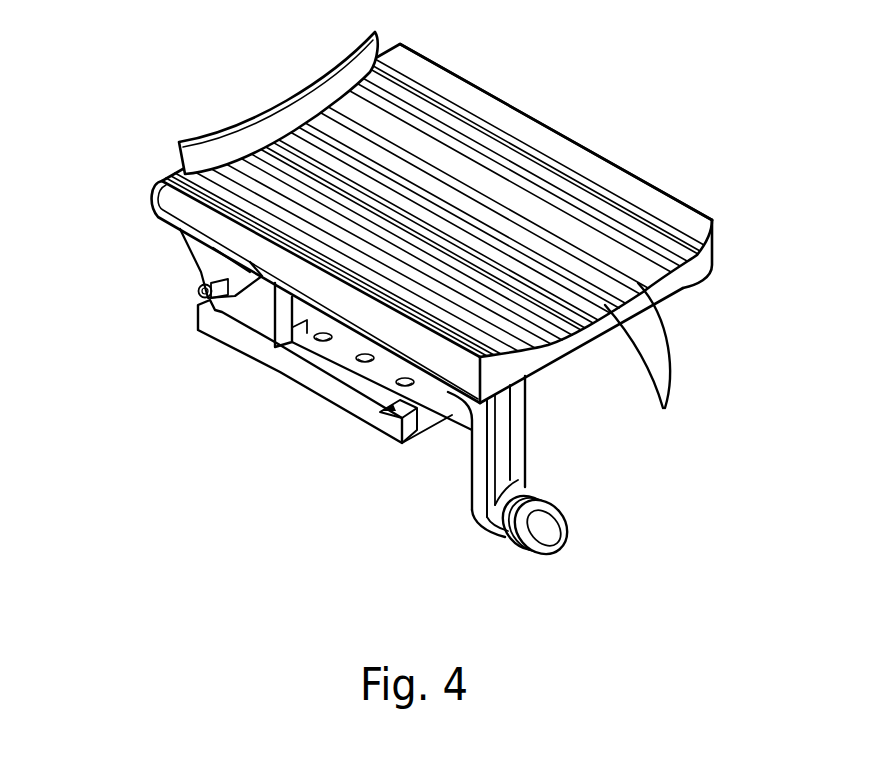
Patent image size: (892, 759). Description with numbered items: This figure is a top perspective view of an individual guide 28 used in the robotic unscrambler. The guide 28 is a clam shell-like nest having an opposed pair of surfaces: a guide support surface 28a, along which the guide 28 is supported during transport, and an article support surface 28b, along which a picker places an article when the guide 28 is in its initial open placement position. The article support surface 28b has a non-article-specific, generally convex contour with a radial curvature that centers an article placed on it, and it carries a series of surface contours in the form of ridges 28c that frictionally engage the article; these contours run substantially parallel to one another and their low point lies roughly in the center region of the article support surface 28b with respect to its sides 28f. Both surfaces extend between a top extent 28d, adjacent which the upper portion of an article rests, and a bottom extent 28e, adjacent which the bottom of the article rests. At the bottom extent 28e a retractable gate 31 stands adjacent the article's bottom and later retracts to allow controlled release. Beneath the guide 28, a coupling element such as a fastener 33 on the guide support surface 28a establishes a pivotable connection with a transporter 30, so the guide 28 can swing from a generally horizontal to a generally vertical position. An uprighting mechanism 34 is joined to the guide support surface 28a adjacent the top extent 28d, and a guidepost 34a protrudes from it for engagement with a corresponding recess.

The guide 28 is at (628, 106).
The guide support surface 28a is at (688, 286).
The article support surface 28b is at (472, 120).
The ridges 28c is at (581, 360).
The top extent 28d is at (568, 350).
The bottom extent 28e is at (181, 172).
The sides 28f is at (653, 183).
The transporter 30 is at (257, 345).
The retractable gate 31 is at (268, 115).
The fastener 33 is at (200, 296).
The uprighting mechanism 34 is at (508, 457).
The guidepost 34a is at (548, 492).